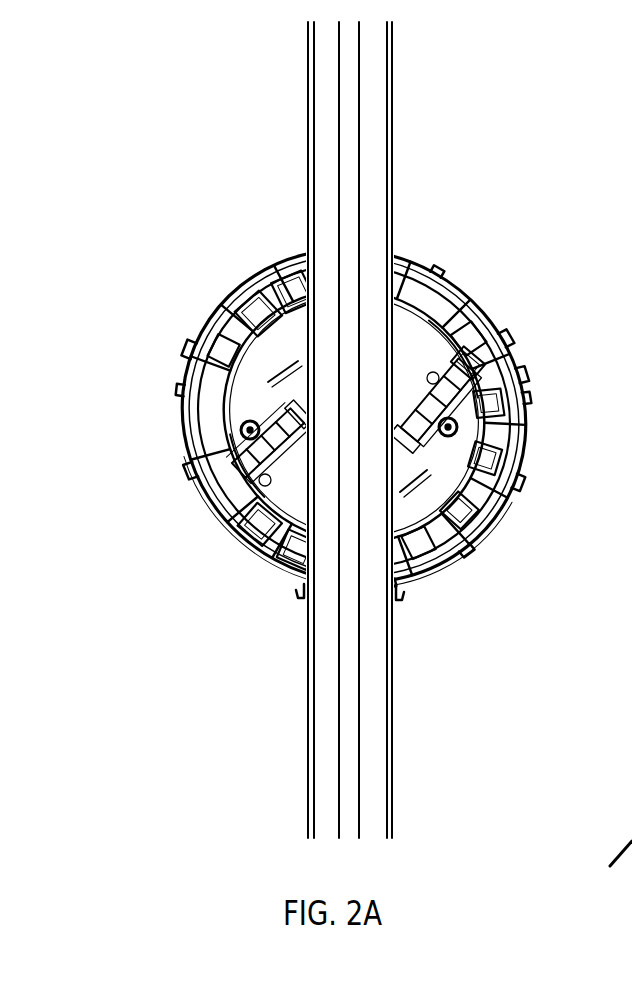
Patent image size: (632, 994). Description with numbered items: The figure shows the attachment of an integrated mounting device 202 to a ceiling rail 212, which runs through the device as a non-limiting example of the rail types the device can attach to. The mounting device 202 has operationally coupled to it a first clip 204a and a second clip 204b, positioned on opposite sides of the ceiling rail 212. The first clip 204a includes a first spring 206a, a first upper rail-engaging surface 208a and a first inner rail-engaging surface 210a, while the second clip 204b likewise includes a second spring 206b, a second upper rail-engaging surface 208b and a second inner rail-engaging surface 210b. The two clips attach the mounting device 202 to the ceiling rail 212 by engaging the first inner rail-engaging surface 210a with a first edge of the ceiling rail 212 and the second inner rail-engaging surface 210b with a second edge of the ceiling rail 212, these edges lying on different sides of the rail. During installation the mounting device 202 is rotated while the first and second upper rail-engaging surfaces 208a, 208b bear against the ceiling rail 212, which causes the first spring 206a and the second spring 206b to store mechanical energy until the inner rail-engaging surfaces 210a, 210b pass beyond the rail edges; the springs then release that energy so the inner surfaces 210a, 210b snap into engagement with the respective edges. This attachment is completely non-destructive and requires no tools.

The mounting device 202 is at (267, 268).
The first clip 204a is at (267, 360).
The second clip 204b is at (442, 492).
The first spring 206a is at (298, 387).
The second spring 206b is at (407, 473).
The first upper rail-engaging surface 208a is at (255, 472).
The second upper rail-engaging surface 208b is at (437, 351).
The first inner rail-engaging surface 210a is at (407, 360).
The second inner rail-engaging surface 210b is at (237, 523).
The ceiling rail 212 is at (398, 107).